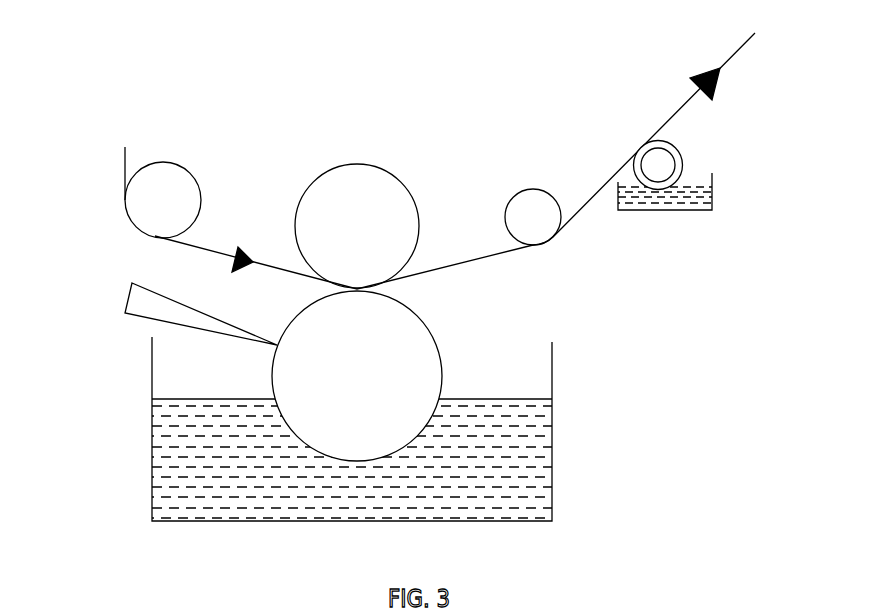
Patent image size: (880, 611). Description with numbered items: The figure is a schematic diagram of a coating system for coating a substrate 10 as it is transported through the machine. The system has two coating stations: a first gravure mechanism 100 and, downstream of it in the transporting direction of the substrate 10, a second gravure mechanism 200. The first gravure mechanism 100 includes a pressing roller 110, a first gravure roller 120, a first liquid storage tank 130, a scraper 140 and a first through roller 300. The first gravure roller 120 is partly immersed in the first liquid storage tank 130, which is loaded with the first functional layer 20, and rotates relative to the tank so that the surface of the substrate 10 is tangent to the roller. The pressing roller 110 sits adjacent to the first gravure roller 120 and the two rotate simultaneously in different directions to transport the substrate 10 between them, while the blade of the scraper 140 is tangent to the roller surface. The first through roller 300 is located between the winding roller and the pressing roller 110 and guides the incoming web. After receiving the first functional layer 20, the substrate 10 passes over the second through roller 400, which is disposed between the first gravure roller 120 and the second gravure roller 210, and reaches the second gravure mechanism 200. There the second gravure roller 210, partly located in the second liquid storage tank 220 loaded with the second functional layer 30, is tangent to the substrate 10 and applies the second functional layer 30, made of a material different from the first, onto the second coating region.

The substrate 10 is at (727, 60).
The first functional layer 20 is at (535, 437).
The second functional layer 30 is at (666, 200).
The first gravure mechanism 100 is at (500, 310).
The pressing roller 110 is at (352, 200).
The first gravure roller 120 is at (413, 332).
The first liquid storage tank 130 is at (550, 380).
The scraper 140 is at (140, 303).
The second gravure mechanism 200 is at (770, 172).
The second gravure roller 210 is at (653, 165).
The second liquid storage tank 220 is at (710, 190).
The first through roller 300 is at (160, 196).
The second through roller 400 is at (537, 215).